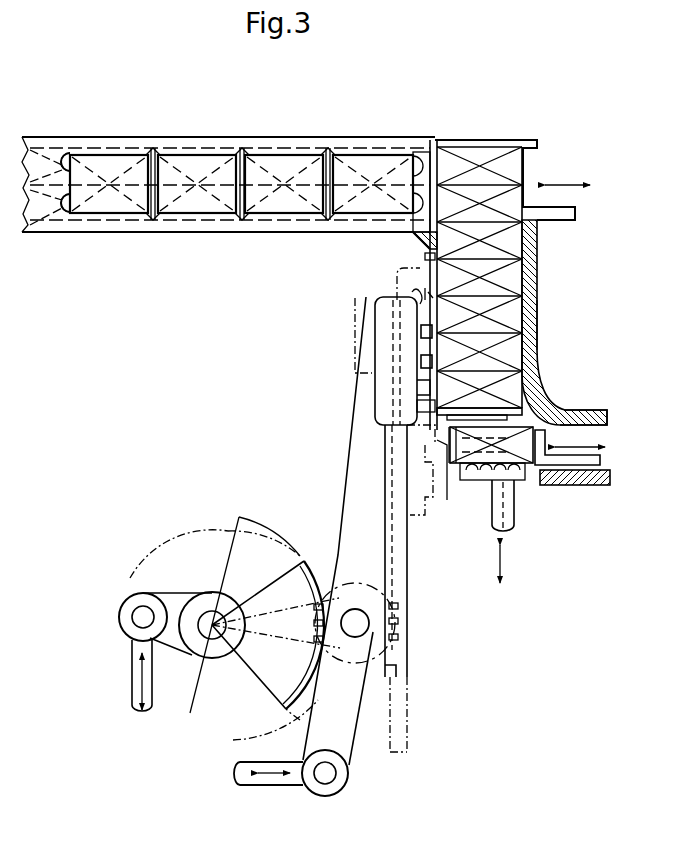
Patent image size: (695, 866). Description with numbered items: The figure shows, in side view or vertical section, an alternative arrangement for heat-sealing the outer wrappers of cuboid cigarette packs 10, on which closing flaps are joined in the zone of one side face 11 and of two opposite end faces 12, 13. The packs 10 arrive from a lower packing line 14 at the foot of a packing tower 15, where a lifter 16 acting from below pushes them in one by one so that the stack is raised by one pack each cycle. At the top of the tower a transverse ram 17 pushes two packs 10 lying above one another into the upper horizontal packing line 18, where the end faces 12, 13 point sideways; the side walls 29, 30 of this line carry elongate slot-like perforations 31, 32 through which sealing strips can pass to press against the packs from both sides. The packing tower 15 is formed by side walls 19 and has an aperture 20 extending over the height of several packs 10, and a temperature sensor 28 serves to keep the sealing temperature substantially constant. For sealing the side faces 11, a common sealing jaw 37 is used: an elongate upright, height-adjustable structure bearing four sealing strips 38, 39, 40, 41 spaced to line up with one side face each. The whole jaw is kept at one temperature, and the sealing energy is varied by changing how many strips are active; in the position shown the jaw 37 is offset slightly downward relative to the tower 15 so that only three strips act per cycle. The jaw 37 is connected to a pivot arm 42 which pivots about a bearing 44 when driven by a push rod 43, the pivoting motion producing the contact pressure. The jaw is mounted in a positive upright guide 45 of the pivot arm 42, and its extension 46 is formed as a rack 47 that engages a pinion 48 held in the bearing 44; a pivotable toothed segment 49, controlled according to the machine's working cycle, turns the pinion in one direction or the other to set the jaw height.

The pack 10 is at (495, 190).
The side face 11 is at (428, 150).
The end face 12 is at (241, 155).
The end face 13 is at (288, 197).
The lower packing line 14 is at (584, 405).
The packing tower 15 is at (550, 282).
The lifter 16 is at (455, 473).
The transverse ram 17 is at (528, 163).
The upper horizontal packing line 18 is at (228, 171).
The side wall 19 is at (530, 337).
The aperture 20 is at (425, 256).
The temperature sensor 28 is at (418, 300).
The side wall 29 is at (68, 145).
The side wall 30 is at (43, 148).
The perforation 31 is at (72, 165).
The perforation 32 is at (62, 212).
The common sealing jaw 37 is at (436, 447).
The sealing strip 38 is at (419, 326).
The sealing strip 39 is at (424, 355).
The sealing strip 40 is at (428, 390).
The sealing strip 41 is at (425, 433).
The pivot arm 42 is at (352, 495).
The push rod 43 is at (272, 787).
The bearing 44 is at (360, 626).
The positive upright guide 45 is at (375, 310).
The extension 46 is at (400, 578).
The rack 47 is at (396, 667).
The pinion 48 is at (323, 600).
The toothed segment 49 is at (276, 708).